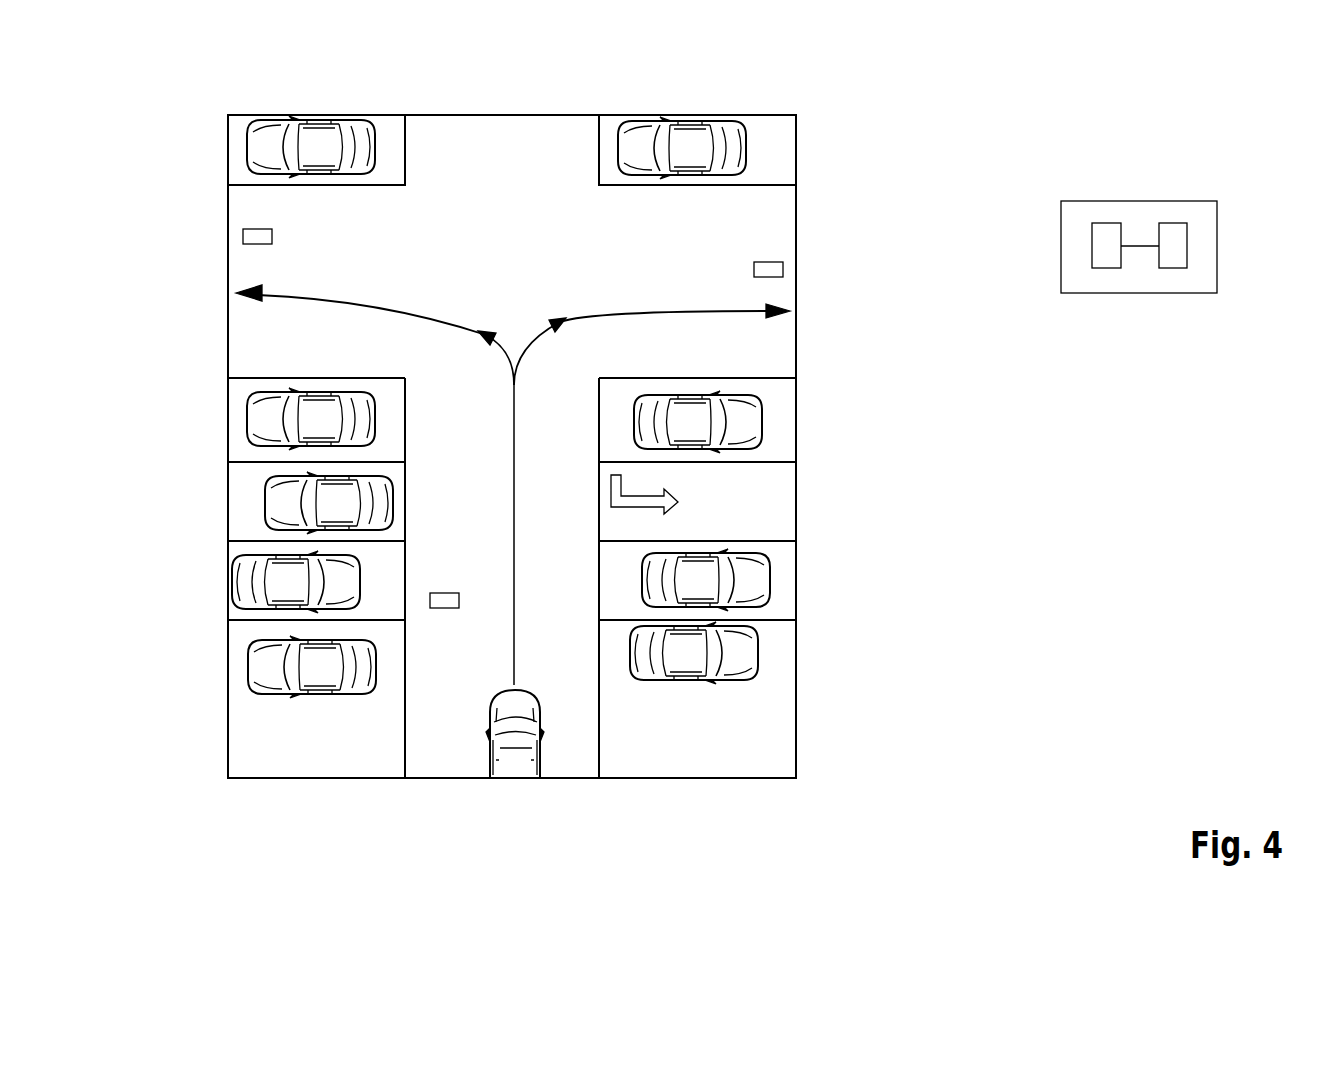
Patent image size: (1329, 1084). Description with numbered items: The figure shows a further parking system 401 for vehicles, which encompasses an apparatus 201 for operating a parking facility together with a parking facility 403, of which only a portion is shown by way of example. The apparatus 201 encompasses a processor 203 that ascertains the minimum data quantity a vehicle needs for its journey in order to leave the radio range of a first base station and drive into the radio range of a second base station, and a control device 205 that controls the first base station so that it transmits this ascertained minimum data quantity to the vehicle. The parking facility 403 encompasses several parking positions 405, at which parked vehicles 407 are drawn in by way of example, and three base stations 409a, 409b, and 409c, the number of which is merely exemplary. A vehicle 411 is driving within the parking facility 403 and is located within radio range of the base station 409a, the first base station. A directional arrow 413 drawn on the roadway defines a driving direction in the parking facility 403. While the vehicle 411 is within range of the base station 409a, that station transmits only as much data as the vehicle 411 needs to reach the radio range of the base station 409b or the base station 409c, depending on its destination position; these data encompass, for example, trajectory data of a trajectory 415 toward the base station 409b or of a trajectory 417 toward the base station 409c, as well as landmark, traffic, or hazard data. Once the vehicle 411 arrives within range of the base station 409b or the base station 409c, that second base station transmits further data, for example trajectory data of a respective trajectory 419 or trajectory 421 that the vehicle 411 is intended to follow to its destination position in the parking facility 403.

The apparatus 201 is at (1217, 246).
The processor 203 is at (1105, 223).
The control device 205 is at (1172, 223).
The parking system 401 is at (928, 140).
The parking facility 403 is at (248, 330).
The parking positions 405 is at (236, 150).
The vehicles 407 is at (264, 137).
The base station 409a is at (444, 592).
The base station 409b is at (243, 237).
The base station 409c is at (783, 268).
The vehicle 411 is at (513, 778).
The directional arrow 413 is at (680, 501).
The trajectory 415 is at (490, 350).
The trajectory 417 is at (540, 342).
The trajectory 419 is at (392, 303).
The trajectory 421 is at (636, 306).